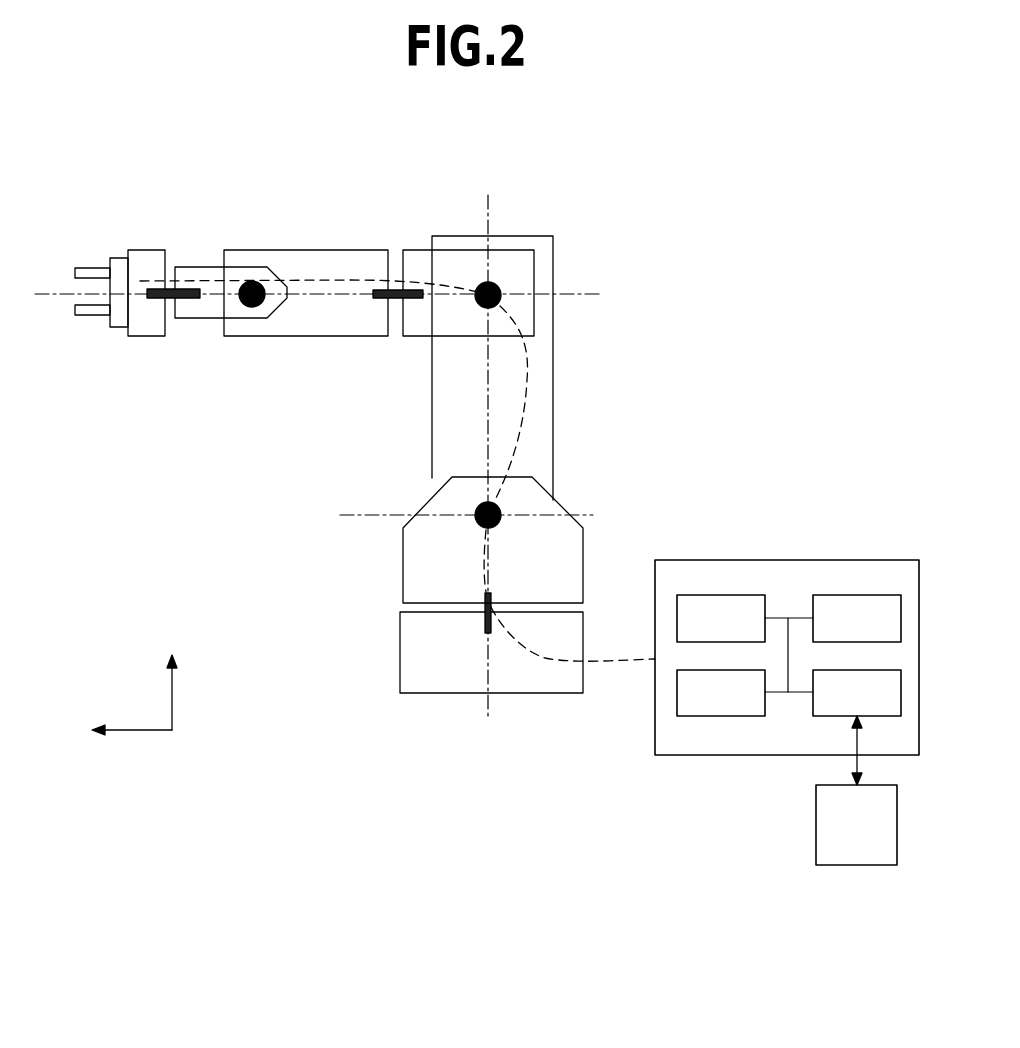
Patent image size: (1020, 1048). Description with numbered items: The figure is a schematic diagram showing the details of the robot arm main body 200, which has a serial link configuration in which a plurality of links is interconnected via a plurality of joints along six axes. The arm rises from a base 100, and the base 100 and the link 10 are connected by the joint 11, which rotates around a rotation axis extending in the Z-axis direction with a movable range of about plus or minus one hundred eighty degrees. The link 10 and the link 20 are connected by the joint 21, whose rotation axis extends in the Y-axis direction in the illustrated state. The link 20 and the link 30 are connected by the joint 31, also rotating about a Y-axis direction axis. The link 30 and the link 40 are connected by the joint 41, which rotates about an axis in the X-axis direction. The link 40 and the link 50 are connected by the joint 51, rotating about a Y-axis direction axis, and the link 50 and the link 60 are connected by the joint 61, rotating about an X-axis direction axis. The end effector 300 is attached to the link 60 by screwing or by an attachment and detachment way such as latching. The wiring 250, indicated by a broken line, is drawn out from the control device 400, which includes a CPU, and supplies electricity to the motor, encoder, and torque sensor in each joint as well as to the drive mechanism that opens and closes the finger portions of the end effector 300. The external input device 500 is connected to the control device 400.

The robot arm main body 200 is at (582, 218).
The base 100 is at (535, 694).
The link 10 is at (566, 502).
The joint 11 is at (486, 622).
The link 20 is at (530, 236).
The joint 21 is at (478, 522).
The link 30 is at (420, 250).
The joint 31 is at (500, 289).
The link 40 is at (305, 250).
The joint 41 is at (398, 300).
The link 50 is at (200, 267).
The joint 51 is at (254, 307).
The link 60 is at (150, 250).
The joint 61 is at (172, 300).
The wiring 250 is at (527, 380).
The end effector 300 is at (60, 327).
The control device 400 is at (800, 560).
The external input device 500 is at (816, 825).